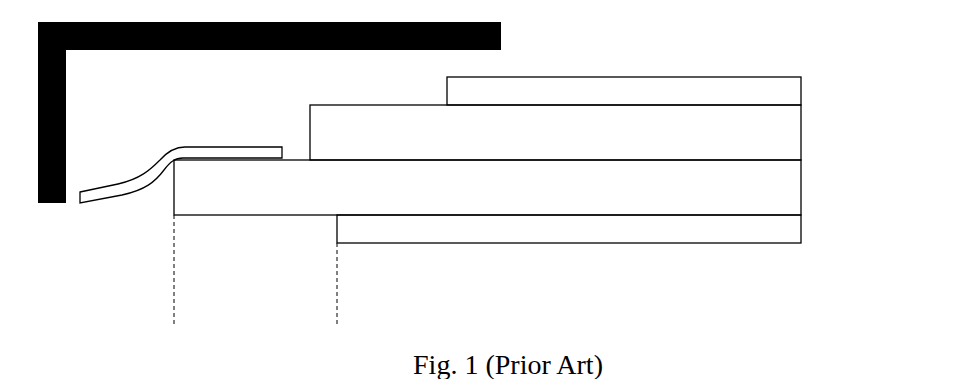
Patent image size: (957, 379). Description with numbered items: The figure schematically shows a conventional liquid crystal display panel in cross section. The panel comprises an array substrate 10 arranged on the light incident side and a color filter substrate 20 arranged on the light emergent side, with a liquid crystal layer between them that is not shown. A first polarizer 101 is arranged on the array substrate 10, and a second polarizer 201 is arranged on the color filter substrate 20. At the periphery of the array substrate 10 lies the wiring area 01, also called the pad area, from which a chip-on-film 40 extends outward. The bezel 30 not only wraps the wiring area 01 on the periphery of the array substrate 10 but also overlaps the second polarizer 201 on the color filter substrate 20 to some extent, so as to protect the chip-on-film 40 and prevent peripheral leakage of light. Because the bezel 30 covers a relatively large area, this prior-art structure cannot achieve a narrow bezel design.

The array substrate 10 is at (746, 187).
The first polarizer 101 is at (742, 229).
The color filter substrate 20 is at (746, 143).
The second polarizer 201 is at (746, 95).
The bezel 30 is at (58, 205).
The chip-on-film 40 is at (118, 187).
The wiring area 01 is at (337, 297).